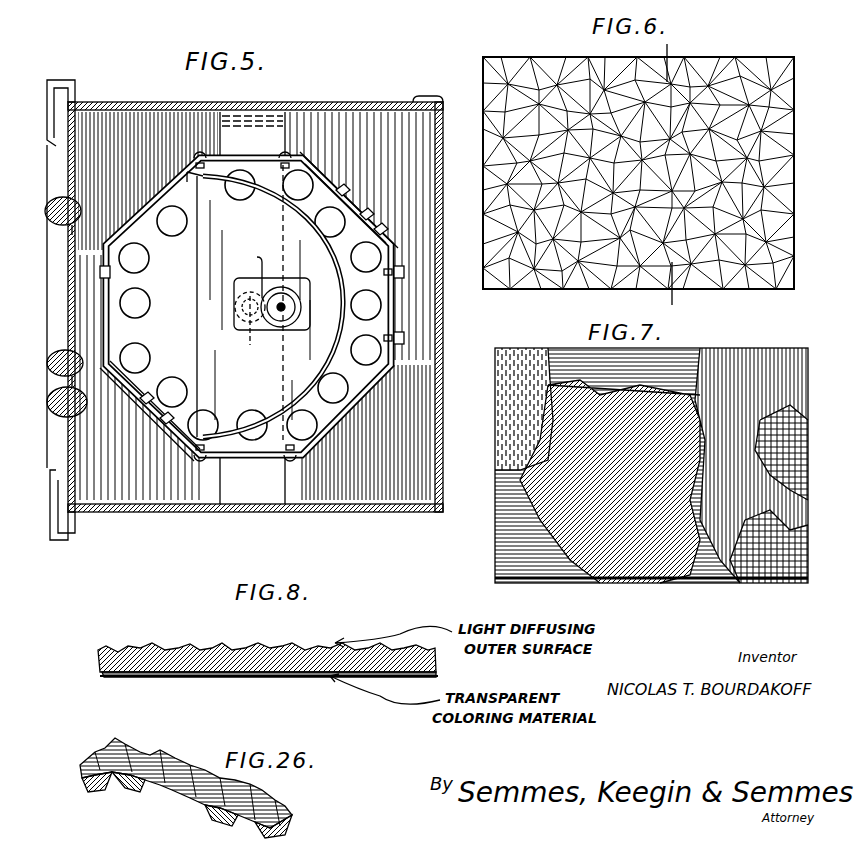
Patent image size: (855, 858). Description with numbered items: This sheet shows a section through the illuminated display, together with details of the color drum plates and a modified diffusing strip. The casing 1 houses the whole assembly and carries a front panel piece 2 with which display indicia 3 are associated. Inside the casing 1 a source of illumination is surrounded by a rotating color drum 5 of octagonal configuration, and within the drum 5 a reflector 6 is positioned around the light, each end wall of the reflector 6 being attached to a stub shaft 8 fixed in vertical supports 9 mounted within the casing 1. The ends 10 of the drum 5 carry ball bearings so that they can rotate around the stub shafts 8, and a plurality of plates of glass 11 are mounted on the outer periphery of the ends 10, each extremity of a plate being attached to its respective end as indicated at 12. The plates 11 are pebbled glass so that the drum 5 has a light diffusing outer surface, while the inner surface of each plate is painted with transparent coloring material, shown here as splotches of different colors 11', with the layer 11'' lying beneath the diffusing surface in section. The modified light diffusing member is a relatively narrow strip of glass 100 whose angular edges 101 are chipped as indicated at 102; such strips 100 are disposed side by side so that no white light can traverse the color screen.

In FIG. 5, the casing 1 is at (312, 111).
In FIG. 5, the front panel piece 2 is at (50, 177).
In FIG. 5, the display indicia 3 is at (47, 212).
In FIG. 5, the color drum 5 is at (390, 199).
In FIG. 5, the reflector 6 is at (322, 258).
In FIG. 5, the stub shaft 8 is at (262, 348).
In FIG. 6, the stub shaft 8 is at (659, 49).
In FIG. 5, the vertical supports 9 is at (240, 506).
In FIG. 5, the ends of the drum 10 is at (380, 238).
In FIG. 5, the plates of glass 11 is at (249, 309).
In FIG. 6, the plates of glass 11 is at (639, 157).
In FIG. 7, the plates of glass 11 is at (651, 450).
In FIG. 8, the plates of glass 11 is at (267, 639).
In FIG. 5, the attachment of plate extremity 12 is at (283, 153).
In FIG. 7, the splotches of transparent coloring material 11' is at (598, 529).
In FIG. 8, the splotches of transparent coloring material 11' is at (269, 685).
In FIG. 7, the backing layer 11'' is at (749, 338).
In FIG. 8, the backing layer 11'' is at (269, 699).
In FIG. 26, the narrow strip of glass 100 is at (172, 770).
In FIG. 26, the angular edges 101 is at (130, 790).
In FIG. 26, the chipped portions 102 is at (100, 757).